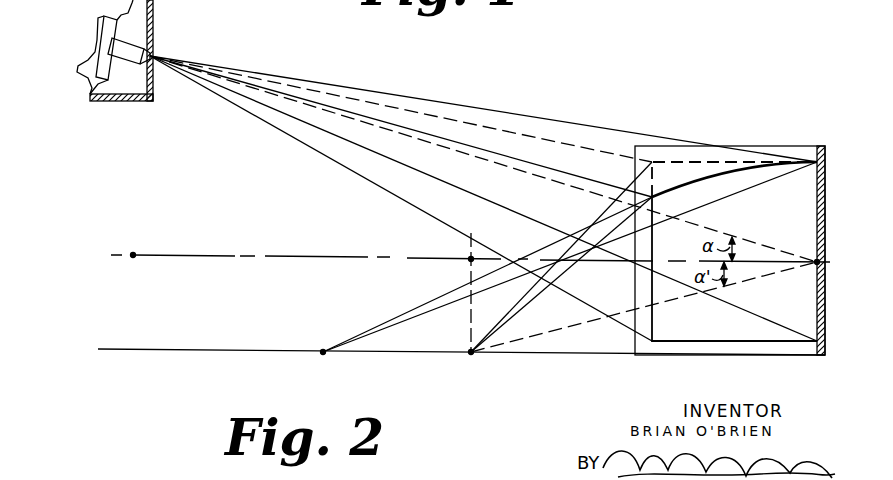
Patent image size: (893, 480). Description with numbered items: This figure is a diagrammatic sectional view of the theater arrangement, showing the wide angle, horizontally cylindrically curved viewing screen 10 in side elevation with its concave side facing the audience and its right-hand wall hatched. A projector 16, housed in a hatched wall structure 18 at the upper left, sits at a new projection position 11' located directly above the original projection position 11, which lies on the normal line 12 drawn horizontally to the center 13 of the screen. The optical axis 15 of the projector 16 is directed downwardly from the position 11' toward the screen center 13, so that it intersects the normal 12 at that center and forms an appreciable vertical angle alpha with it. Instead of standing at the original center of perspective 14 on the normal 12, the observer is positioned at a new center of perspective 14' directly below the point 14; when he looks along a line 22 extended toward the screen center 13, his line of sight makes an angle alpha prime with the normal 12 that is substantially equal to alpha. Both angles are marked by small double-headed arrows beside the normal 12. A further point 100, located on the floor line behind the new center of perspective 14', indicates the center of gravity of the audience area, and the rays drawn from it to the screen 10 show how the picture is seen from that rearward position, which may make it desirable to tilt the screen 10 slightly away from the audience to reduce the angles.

The viewing screen 10 is at (782, 147).
The projection position 11 is at (173, 270).
The new projection position 11' is at (483, 182).
The normal line 12 is at (337, 256).
The center of the screen 13 is at (814, 258).
The center of perspective 14 is at (445, 292).
The new center of perspective 14' is at (561, 275).
The optical axis 15 is at (571, 188).
The projector 16 is at (102, 28).
The wall 18 is at (143, 10).
The line of sight 22 is at (585, 322).
The center of gravity of the audience area 100 is at (323, 349).